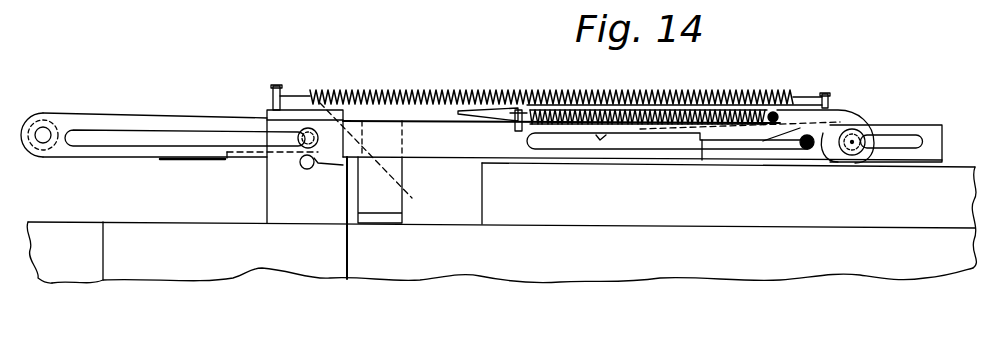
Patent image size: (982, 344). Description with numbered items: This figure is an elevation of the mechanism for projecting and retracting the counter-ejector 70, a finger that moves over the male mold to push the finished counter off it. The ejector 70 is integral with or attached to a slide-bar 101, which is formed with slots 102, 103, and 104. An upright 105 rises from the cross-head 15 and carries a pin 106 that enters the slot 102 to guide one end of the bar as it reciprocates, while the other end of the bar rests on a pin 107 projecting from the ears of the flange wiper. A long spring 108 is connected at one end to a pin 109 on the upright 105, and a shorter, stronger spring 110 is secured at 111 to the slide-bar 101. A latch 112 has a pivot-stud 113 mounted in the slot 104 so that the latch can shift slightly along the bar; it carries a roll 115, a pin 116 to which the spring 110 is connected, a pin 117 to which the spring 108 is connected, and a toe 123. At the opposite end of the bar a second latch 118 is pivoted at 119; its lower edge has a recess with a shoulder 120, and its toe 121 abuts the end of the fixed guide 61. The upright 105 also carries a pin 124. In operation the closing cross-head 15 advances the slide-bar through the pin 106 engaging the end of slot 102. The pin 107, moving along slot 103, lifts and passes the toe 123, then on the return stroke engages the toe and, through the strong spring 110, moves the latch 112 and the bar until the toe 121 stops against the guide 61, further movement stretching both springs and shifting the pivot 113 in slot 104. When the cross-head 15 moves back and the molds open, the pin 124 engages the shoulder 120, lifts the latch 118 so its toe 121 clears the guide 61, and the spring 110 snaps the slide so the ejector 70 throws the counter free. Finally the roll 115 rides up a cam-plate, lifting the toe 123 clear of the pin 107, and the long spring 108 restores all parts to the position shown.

The cross-head 15 is at (501, 252).
The counter-ejector 70 is at (358, 225).
The guides 61 is at (637, 212).
The slide-bar 101 is at (436, 149).
The slot 102 is at (140, 140).
The slot 103 is at (577, 135).
The slot 104 is at (903, 132).
The upright 105 is at (277, 192).
The pin 106 is at (312, 133).
The pin 107 is at (807, 150).
The spring 108 is at (428, 92).
The pin 109 is at (279, 88).
The spring 110 is at (652, 148).
The securing point 111 is at (520, 110).
The latch 112 is at (770, 114).
The pivot-stud 113 is at (856, 156).
The roll 115 is at (648, 132).
The pin 116 is at (786, 116).
The pin 117 is at (830, 95).
The latch 118 is at (200, 162).
The pivot 119 is at (45, 133).
The shoulder 120 is at (227, 161).
The toe 121 is at (403, 195).
The toe 123 is at (601, 140).
The pin 124 is at (307, 169).